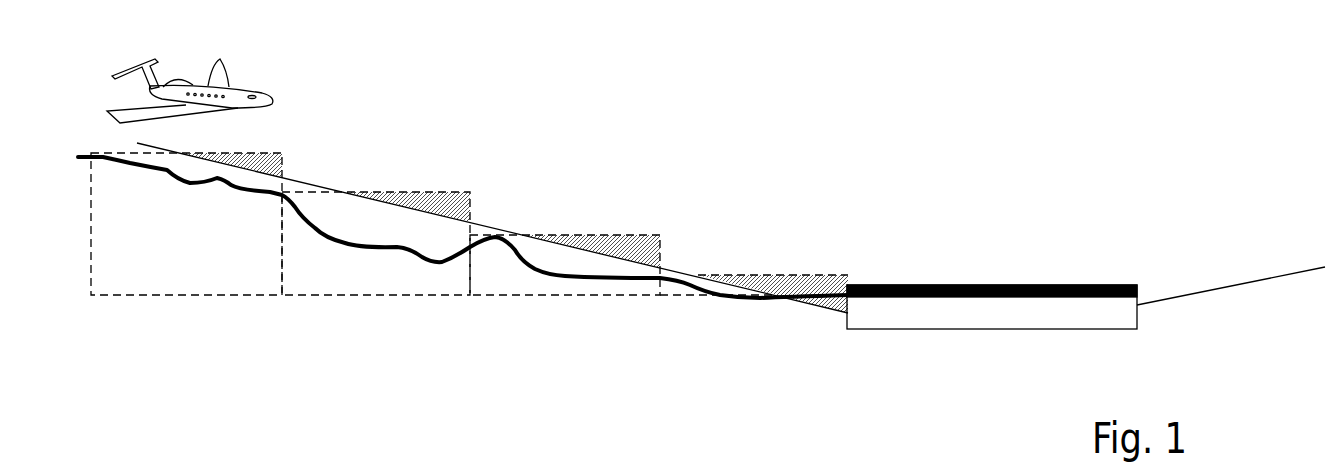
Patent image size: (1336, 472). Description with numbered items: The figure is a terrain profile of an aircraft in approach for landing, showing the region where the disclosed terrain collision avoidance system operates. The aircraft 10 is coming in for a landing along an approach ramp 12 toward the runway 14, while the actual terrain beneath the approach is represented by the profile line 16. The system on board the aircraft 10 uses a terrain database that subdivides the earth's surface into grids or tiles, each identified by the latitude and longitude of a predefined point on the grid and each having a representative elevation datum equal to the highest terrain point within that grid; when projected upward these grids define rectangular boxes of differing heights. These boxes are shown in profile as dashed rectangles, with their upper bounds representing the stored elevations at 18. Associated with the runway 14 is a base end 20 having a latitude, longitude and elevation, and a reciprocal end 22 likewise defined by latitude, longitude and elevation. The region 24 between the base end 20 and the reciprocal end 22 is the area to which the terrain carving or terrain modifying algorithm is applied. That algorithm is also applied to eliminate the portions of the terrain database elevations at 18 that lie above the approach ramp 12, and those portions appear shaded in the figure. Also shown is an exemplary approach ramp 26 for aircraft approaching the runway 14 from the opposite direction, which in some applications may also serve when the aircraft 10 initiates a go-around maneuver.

The aircraft 10 is at (240, 88).
The approach ramp 12 is at (305, 183).
The runway 14 is at (1030, 285).
The profile line 16 is at (420, 258).
The elevations 18 is at (252, 153).
The base end 20 is at (848, 261).
The reciprocal end 22 is at (1137, 262).
The region 24 is at (995, 329).
The approach ramp 26 is at (1248, 278).